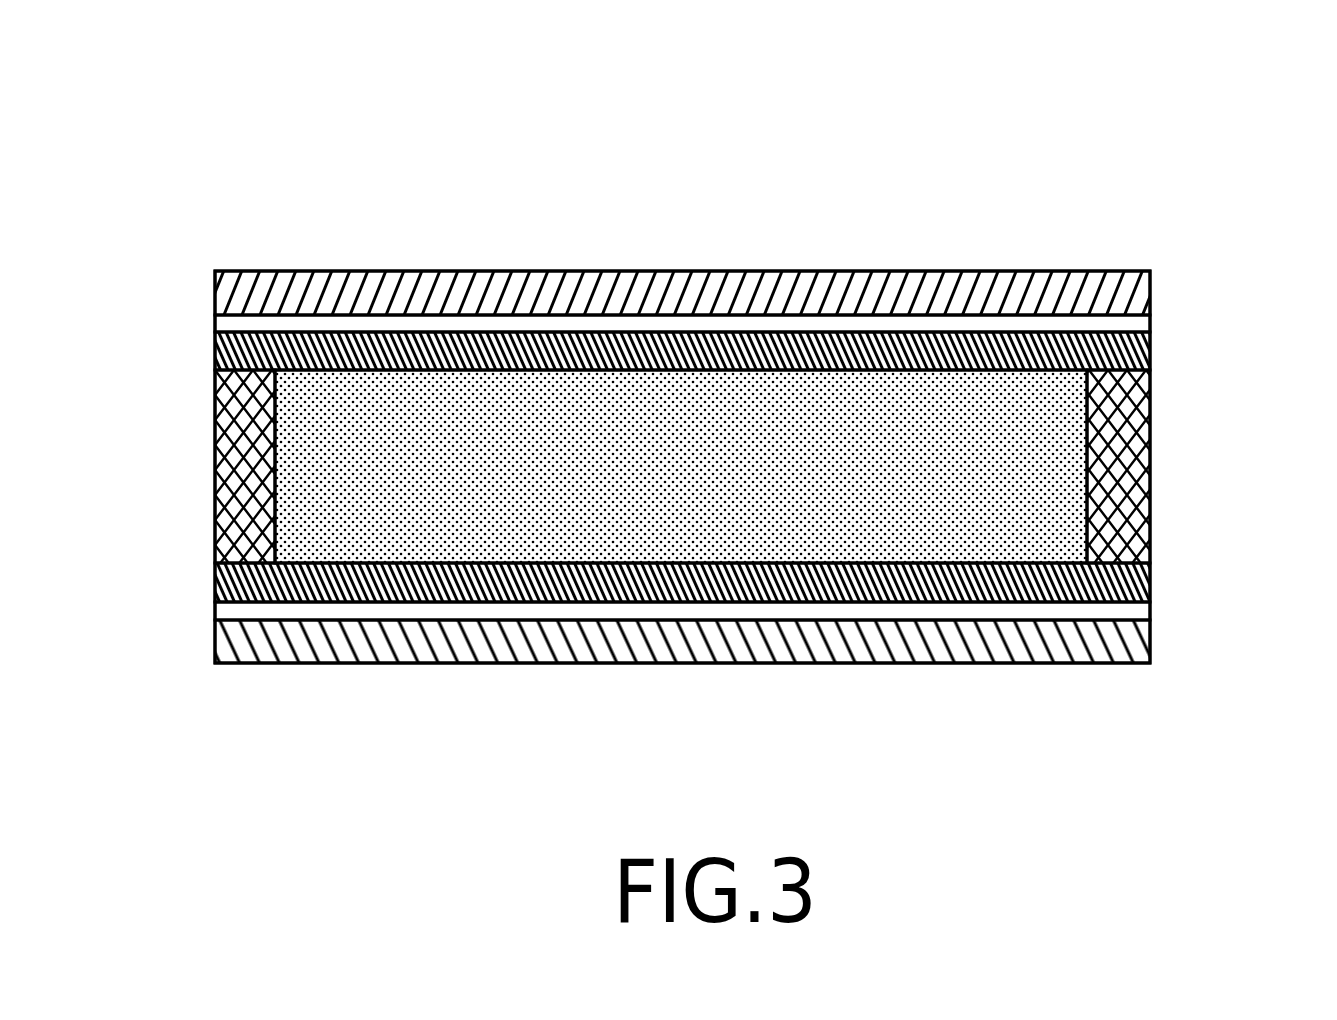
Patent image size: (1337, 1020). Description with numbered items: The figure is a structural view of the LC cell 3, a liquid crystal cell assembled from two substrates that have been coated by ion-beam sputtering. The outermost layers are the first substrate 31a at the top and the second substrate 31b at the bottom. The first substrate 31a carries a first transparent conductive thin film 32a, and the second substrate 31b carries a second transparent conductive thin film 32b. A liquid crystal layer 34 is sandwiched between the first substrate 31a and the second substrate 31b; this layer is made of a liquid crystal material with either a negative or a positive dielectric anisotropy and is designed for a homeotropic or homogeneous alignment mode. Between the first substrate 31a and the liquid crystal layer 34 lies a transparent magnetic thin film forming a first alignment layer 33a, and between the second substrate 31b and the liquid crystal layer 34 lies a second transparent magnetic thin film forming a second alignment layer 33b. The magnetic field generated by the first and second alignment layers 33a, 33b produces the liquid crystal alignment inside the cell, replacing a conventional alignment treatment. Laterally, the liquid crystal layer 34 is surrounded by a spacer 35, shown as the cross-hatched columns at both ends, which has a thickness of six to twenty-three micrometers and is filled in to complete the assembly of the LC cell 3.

The LC cell 3 is at (670, 172).
The first substrate 31a is at (1150, 284).
The second substrate 31b is at (1150, 640).
The first transparent conductive thin film 32a is at (215, 330).
The second transparent conductive thin film 32b is at (215, 616).
The first alignment layer 33a is at (1150, 347).
The second alignment layer 33b is at (1150, 582).
The liquid crystal layer 34 is at (682, 413).
The spacer 35 is at (215, 465).